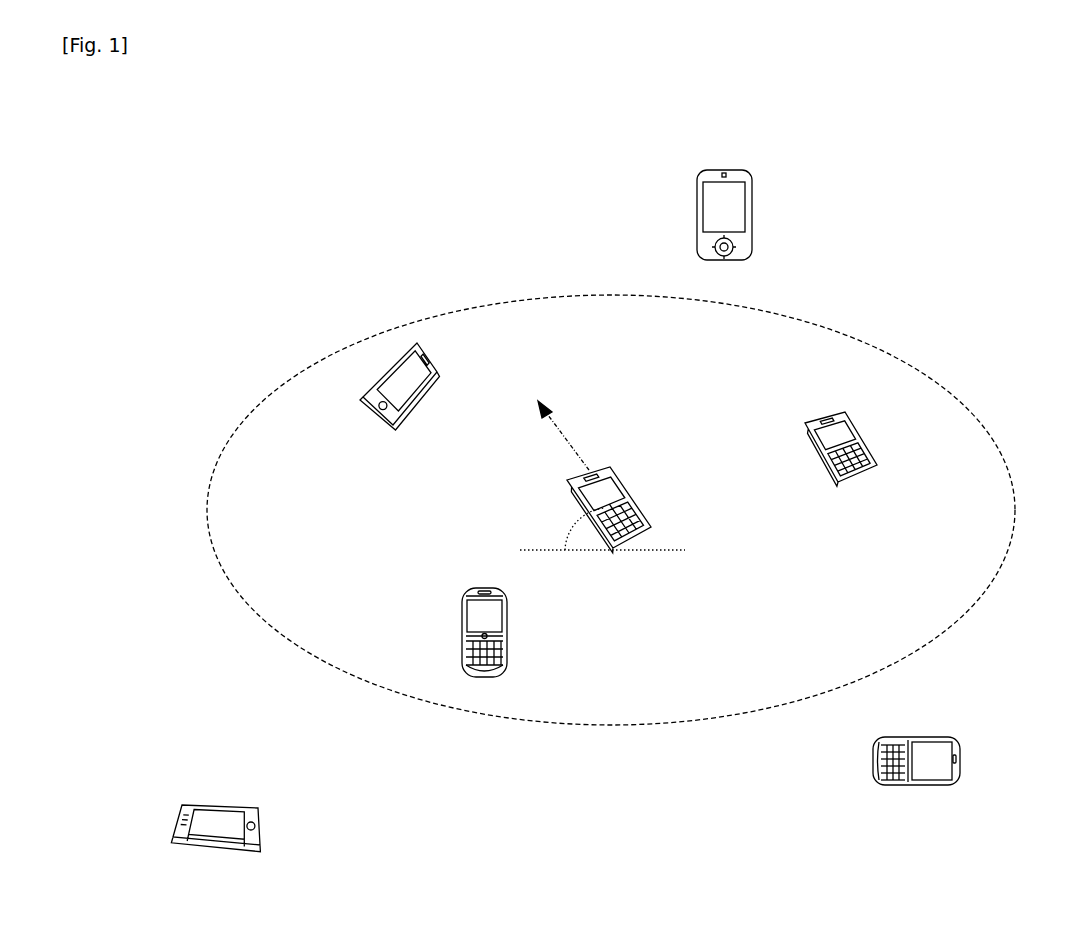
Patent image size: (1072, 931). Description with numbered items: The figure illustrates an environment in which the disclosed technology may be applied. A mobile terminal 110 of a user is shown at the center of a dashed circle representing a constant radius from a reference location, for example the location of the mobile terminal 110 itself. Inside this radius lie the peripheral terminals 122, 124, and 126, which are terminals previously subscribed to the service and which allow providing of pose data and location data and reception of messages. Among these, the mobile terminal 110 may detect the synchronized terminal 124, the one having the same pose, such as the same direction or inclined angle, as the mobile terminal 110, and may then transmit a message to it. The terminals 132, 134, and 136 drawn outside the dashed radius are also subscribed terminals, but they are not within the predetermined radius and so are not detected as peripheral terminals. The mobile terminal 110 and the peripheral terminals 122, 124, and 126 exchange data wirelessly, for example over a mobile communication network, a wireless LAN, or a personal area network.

The mobile terminal 110 is at (627, 483).
The peripheral terminal 122 is at (430, 384).
The synchronized terminal 124 is at (862, 434).
The peripheral terminal 126 is at (510, 645).
The terminal 132 is at (752, 210).
The terminal 134 is at (962, 751).
The terminal 136 is at (262, 825).